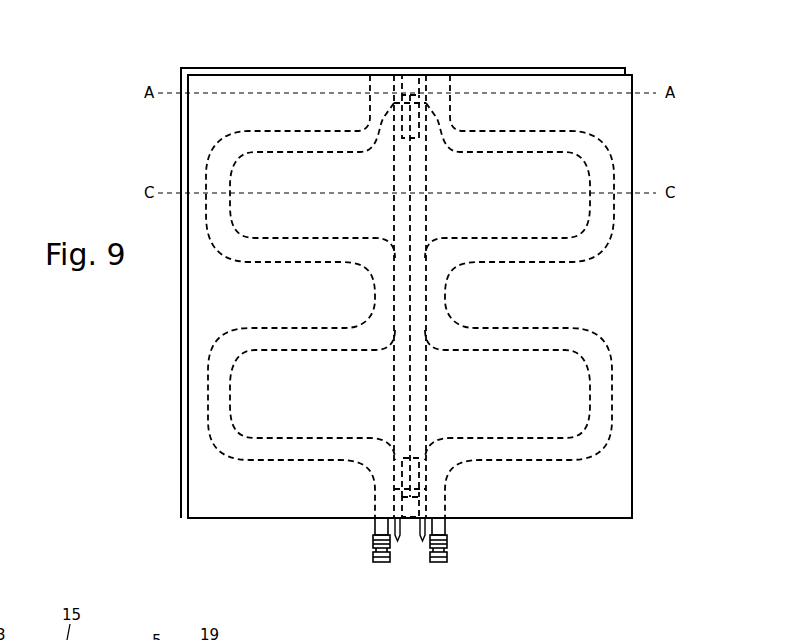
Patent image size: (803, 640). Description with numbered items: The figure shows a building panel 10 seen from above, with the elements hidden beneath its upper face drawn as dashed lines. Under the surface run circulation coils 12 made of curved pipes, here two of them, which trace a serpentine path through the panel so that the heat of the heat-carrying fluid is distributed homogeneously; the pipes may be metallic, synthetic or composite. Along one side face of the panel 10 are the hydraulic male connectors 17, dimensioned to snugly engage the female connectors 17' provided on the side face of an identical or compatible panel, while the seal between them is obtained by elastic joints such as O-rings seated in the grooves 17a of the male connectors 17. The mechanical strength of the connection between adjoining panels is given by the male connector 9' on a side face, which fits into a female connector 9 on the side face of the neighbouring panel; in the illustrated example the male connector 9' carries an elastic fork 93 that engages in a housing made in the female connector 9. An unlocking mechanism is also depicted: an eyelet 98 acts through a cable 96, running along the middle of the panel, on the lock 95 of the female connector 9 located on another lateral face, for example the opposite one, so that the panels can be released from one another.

The female connector 9 is at (381, 70).
The male connector 9' is at (377, 507).
The building panel 10 is at (133, 403).
The circulation coils 12 is at (220, 424).
The male connectors 17 is at (346, 569).
The grooves 17a is at (378, 554).
The female connectors 17' is at (472, 41).
The elastic fork 93 is at (420, 538).
The lock 95 is at (411, 80).
The cable 96 is at (410, 253).
The eyelet 98 is at (413, 520).